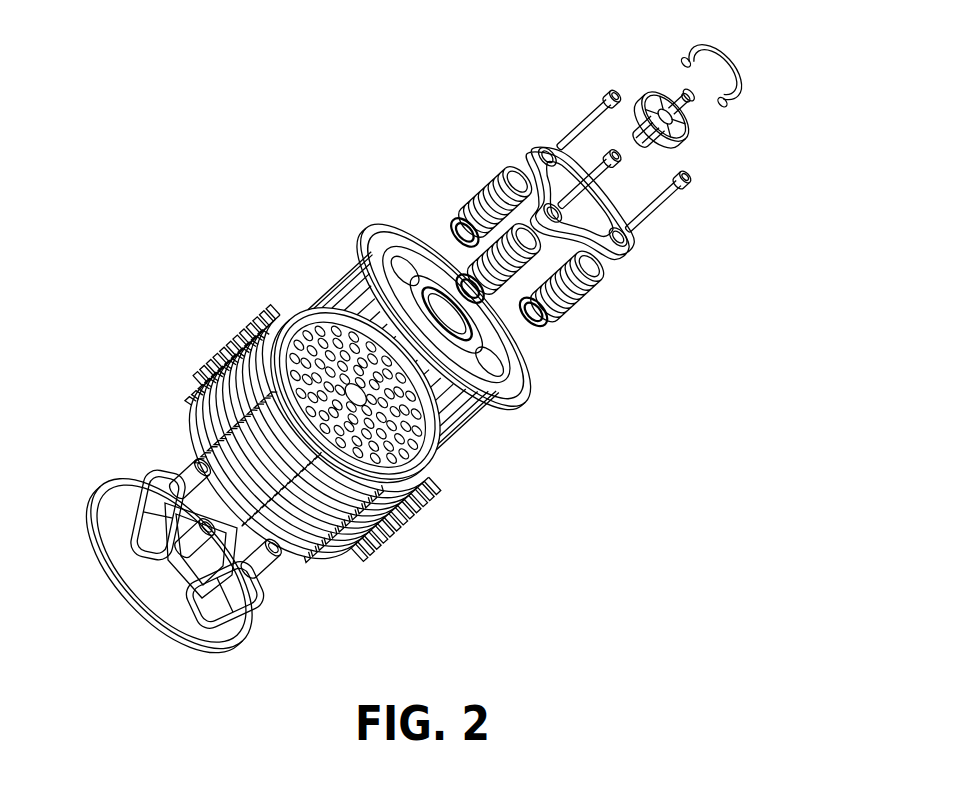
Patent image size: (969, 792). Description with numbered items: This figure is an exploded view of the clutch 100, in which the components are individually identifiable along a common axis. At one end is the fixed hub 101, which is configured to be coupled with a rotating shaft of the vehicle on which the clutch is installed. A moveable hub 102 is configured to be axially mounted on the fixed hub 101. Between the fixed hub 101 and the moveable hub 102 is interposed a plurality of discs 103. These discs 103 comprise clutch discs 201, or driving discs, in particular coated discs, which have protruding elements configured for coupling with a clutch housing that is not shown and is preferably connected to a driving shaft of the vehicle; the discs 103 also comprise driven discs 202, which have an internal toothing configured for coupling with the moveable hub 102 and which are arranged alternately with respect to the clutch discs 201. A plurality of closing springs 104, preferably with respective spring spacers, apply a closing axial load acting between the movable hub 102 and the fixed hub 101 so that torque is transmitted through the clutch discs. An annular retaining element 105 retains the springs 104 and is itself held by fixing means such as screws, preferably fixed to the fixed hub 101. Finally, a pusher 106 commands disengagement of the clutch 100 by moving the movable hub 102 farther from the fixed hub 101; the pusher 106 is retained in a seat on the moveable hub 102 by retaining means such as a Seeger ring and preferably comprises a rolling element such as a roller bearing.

The clutch 100 is at (252, 120).
The fixed hub 101 is at (114, 482).
The moveable hub 102 is at (517, 392).
The discs 103 is at (305, 364).
The closing springs 104 is at (575, 323).
The annular retaining element 105 is at (528, 158).
The pusher 106 is at (684, 147).
The clutch discs 201 is at (300, 314).
The driven discs 202 is at (262, 356).